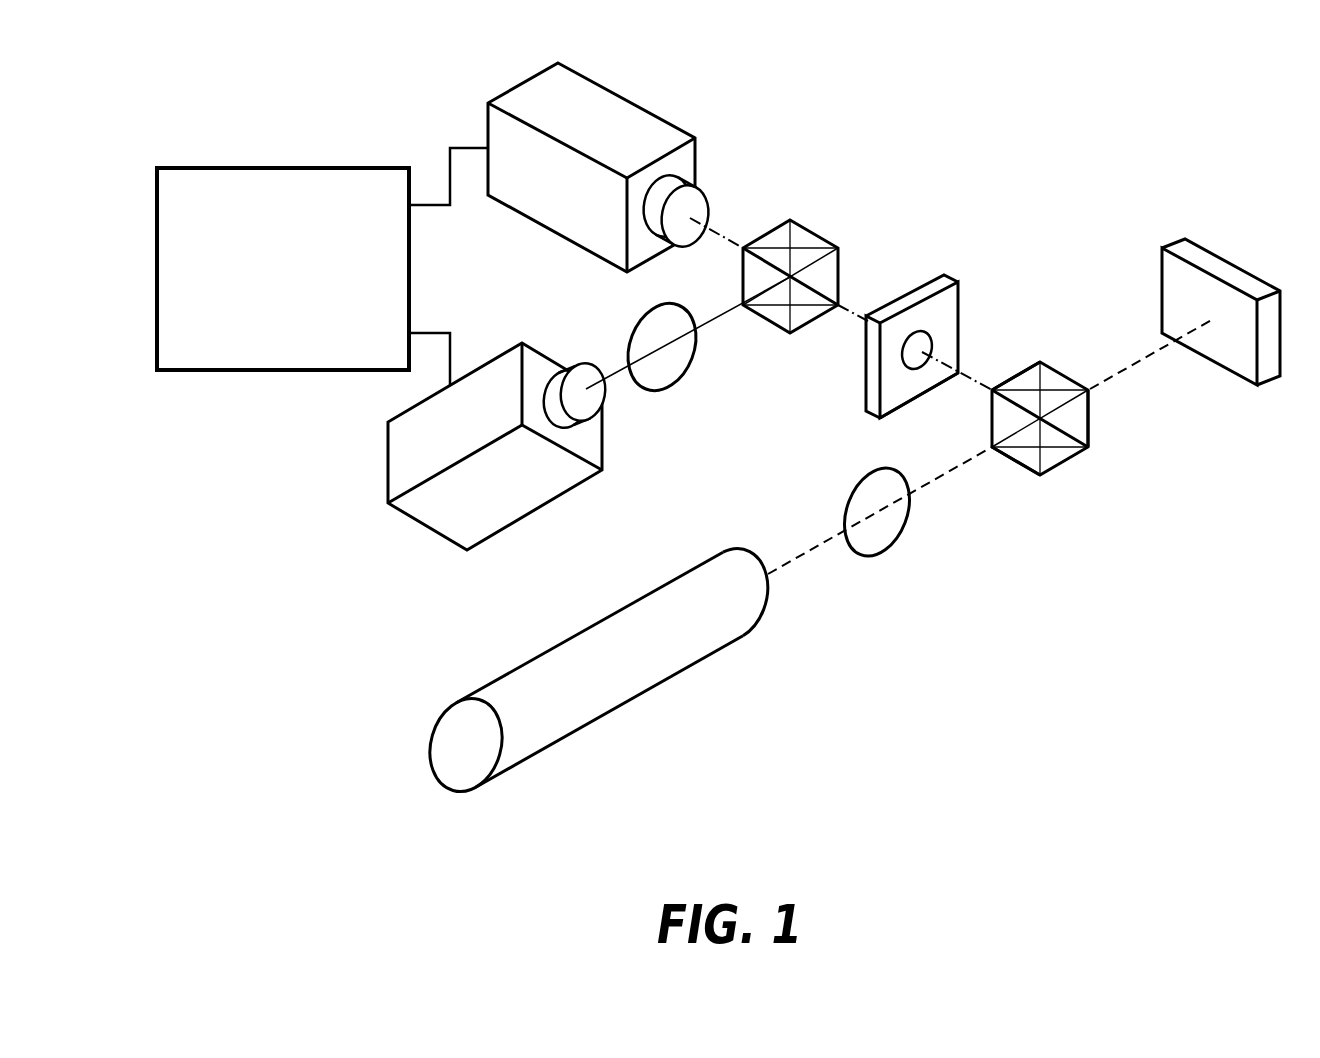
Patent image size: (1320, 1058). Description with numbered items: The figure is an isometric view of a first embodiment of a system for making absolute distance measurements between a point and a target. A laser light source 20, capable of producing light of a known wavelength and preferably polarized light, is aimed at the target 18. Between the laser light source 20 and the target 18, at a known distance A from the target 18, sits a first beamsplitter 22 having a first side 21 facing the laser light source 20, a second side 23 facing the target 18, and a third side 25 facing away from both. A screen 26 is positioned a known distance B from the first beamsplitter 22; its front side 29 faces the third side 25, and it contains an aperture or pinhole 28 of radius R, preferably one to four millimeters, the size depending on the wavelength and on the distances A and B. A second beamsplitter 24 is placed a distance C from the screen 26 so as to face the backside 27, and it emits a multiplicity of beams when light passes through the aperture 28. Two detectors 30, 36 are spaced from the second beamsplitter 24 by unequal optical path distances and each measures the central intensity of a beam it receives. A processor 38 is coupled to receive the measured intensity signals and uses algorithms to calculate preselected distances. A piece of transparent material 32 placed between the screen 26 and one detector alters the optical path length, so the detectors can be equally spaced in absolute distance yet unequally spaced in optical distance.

The target 18 is at (1215, 265).
The laser light source 20 is at (497, 687).
The first side 21 is at (1017, 452).
The first beamsplitter 22 is at (1075, 415).
The second side 23 is at (1092, 413).
The second beamsplitter 24 is at (806, 232).
The third side 25 is at (1007, 377).
The screen 26 is at (877, 340).
The backside 27 is at (865, 378).
The aperture 28 is at (915, 342).
The front side 29 is at (922, 383).
The camera 30 is at (392, 453).
The transparent material 32 is at (692, 378).
The camera 36 is at (622, 112).
The processor 38 is at (268, 300).